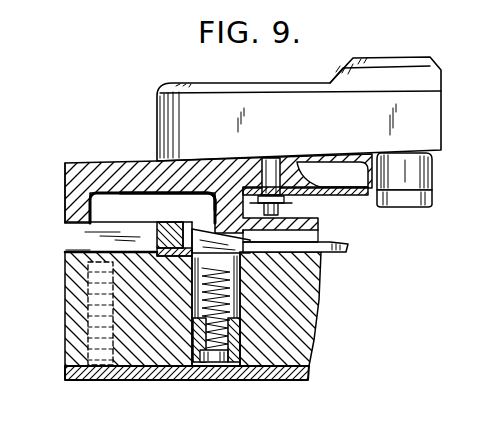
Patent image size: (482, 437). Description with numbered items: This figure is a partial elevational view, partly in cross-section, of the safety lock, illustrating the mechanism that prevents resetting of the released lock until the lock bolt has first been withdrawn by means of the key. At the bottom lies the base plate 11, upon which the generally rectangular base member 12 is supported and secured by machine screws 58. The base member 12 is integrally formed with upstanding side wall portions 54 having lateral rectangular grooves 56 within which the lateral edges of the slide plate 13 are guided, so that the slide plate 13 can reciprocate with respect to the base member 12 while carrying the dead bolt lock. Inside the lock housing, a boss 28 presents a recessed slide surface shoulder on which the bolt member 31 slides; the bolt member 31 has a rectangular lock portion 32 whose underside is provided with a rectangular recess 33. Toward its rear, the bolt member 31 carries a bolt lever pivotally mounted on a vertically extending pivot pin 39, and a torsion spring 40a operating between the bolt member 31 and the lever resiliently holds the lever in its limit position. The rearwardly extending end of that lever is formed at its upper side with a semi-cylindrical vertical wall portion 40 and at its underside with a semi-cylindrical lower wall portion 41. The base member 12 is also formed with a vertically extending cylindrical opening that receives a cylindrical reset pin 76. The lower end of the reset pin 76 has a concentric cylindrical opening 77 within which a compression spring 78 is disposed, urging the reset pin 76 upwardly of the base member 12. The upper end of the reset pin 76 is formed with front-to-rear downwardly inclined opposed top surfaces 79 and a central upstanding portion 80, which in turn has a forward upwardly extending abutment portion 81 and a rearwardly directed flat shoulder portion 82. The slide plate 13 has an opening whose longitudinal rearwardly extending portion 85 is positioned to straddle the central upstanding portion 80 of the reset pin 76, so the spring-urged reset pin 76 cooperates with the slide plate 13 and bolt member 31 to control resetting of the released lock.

The base plate 11 is at (142, 387).
The base member 12 is at (68, 343).
The slide plate 13 is at (345, 249).
The boss 28 is at (476, 328).
The bolt member 31 is at (122, 156).
The lock portion 32 is at (86, 162).
The rectangular recess 33 is at (106, 204).
The pivot pin 39 is at (278, 160).
The semi-cylindrical vertical wall portion 40 is at (433, 170).
The torsion spring 40a is at (318, 206).
The semi-cylindrical lower wall portion 41 is at (433, 203).
The side wall portion 54 is at (75, 237).
The lateral rectangular groove 56 is at (72, 251).
The machine screw 58 is at (73, 312).
The reset pin 76 is at (190, 318).
The concentric cylindrical opening 77 is at (200, 362).
The compression spring 78 is at (238, 362).
The inclined top surfaces 79 is at (240, 258).
The central upstanding portion 80 is at (206, 215).
The abutment portion 81 is at (194, 207).
The flat shoulder portion 82 is at (233, 168).
The longitudinal rearwardly extending portion 85 is at (330, 254).